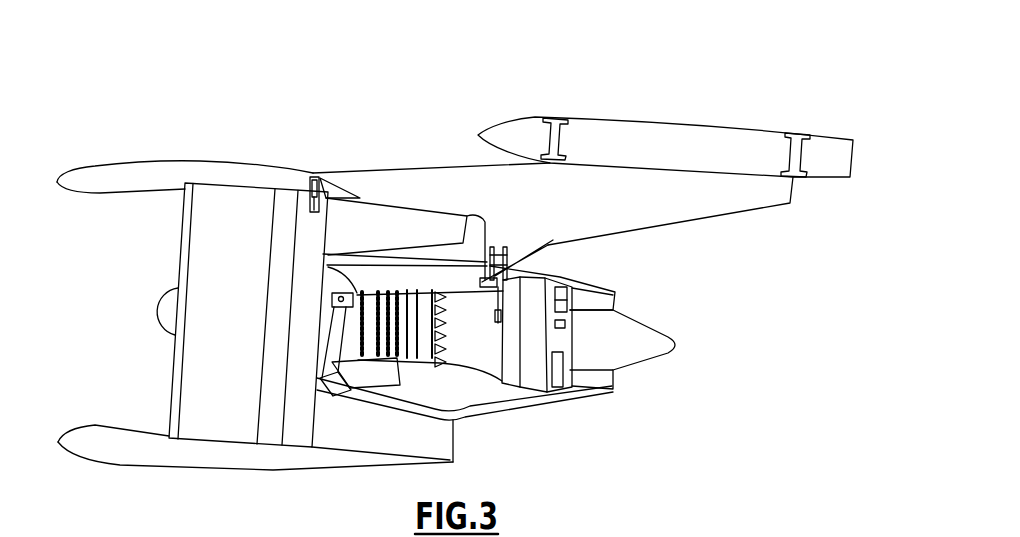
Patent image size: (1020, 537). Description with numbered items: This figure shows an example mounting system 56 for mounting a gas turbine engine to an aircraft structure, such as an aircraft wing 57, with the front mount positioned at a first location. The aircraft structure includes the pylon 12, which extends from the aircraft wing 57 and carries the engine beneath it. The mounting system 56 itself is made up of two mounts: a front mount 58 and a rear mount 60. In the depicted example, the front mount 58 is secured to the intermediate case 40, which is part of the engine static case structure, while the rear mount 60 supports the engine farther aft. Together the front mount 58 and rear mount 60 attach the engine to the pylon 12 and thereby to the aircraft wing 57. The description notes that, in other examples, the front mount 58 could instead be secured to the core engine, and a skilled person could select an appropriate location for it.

The pylon 12 is at (446, 180).
The intermediate case 40 is at (294, 450).
The mounting system 56 is at (566, 72).
The aircraft wing 57 is at (661, 135).
The front mount 58 is at (313, 178).
The rear mount 60 is at (522, 234).